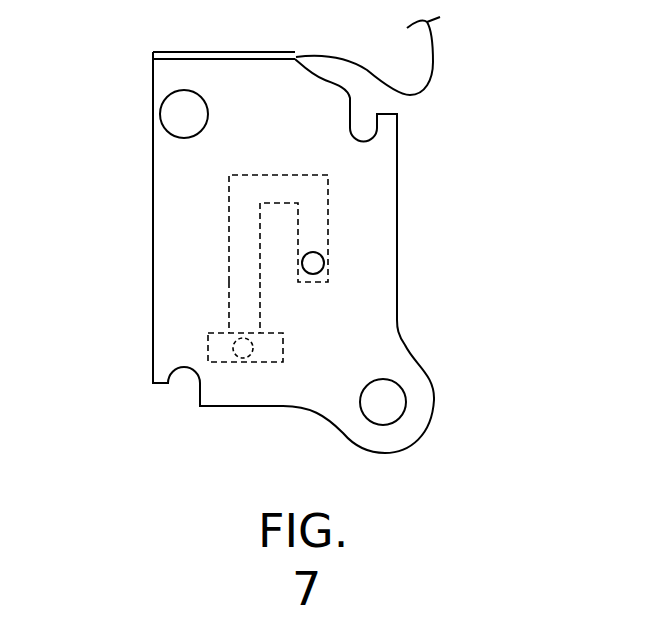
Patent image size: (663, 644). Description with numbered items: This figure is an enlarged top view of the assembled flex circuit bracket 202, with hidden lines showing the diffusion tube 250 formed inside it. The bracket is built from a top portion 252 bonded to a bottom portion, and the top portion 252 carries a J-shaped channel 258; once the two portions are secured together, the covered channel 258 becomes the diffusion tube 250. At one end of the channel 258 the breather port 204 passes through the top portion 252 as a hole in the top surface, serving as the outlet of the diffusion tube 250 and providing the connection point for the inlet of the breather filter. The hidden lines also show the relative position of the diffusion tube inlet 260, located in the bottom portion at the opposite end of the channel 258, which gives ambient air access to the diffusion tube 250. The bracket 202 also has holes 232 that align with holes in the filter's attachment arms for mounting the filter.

The flex circuit bracket 202 is at (452, 318).
The breather port 204 is at (315, 250).
The holes 232 is at (370, 418).
The diffusion tube 250 is at (216, 250).
The top portion 252 is at (378, 175).
The J-shaped channel 258 is at (229, 303).
The diffusion tube inlet 260 is at (253, 348).